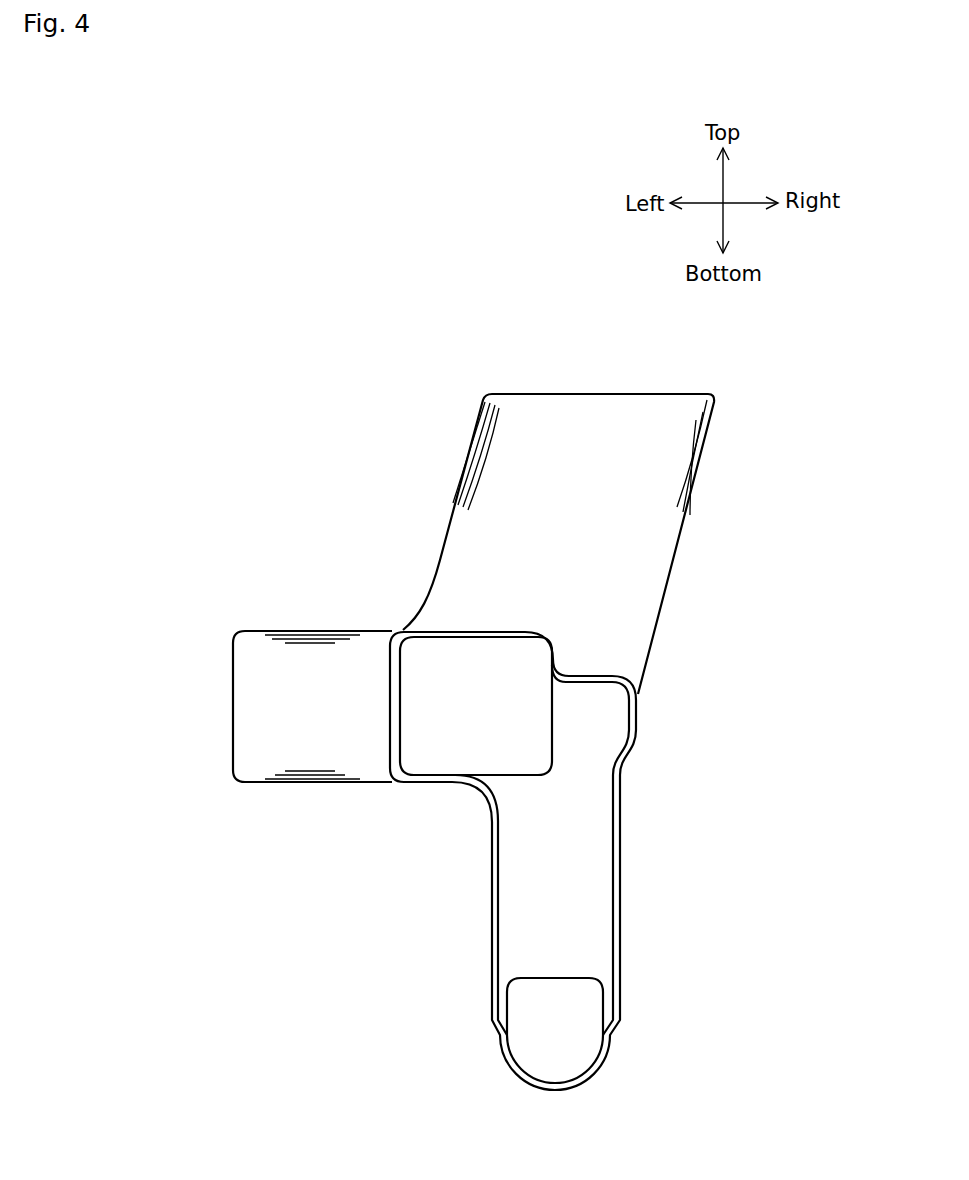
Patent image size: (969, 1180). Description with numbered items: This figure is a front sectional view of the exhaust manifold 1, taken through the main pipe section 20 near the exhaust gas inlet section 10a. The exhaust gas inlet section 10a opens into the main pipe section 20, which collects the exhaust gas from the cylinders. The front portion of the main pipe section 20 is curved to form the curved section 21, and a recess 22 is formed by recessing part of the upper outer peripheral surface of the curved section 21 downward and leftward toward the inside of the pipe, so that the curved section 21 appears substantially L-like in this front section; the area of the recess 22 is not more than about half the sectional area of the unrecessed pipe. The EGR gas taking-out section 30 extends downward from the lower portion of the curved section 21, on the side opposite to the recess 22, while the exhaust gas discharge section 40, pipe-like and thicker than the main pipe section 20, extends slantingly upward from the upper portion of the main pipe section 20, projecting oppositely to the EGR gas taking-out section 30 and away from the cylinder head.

The exhaust manifold 1 is at (438, 290).
The exhaust gas inlet section 10a is at (243, 701).
The main pipe section 20 is at (532, 744).
The curved section 21 is at (640, 695).
The recess 22 is at (597, 673).
The EGR gas taking-out section 30 is at (600, 957).
The exhaust gas discharge section 40 is at (598, 404).